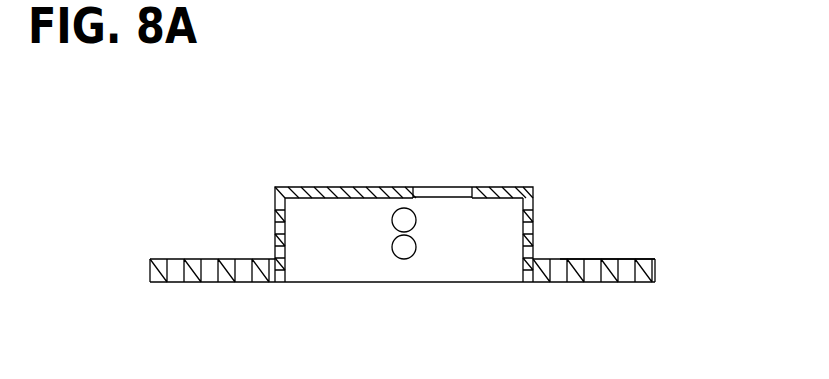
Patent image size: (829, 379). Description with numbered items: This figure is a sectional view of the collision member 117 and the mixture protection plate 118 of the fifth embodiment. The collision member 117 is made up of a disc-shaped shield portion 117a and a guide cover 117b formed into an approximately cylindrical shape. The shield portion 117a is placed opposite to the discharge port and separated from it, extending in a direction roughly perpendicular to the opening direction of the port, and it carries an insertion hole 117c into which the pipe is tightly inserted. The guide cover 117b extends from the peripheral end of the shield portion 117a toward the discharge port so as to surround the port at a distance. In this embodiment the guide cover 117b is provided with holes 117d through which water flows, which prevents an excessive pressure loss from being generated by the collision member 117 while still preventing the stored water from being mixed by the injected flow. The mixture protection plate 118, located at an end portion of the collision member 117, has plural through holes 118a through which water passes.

The collision member 117 is at (490, 181).
The shield portion 117a is at (343, 187).
The guide cover 117b is at (287, 232).
The insertion hole 117c is at (447, 187).
The holes 117d is at (535, 210).
The mixture protection plate 118 is at (655, 268).
The through holes 118a is at (590, 259).